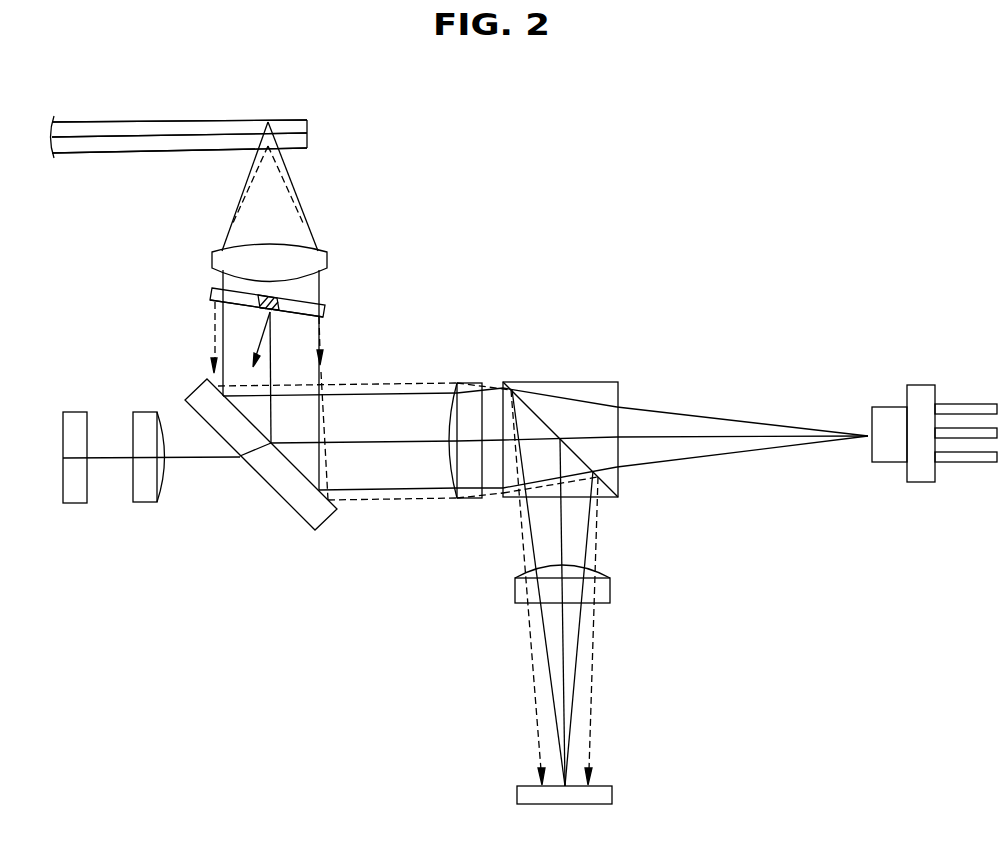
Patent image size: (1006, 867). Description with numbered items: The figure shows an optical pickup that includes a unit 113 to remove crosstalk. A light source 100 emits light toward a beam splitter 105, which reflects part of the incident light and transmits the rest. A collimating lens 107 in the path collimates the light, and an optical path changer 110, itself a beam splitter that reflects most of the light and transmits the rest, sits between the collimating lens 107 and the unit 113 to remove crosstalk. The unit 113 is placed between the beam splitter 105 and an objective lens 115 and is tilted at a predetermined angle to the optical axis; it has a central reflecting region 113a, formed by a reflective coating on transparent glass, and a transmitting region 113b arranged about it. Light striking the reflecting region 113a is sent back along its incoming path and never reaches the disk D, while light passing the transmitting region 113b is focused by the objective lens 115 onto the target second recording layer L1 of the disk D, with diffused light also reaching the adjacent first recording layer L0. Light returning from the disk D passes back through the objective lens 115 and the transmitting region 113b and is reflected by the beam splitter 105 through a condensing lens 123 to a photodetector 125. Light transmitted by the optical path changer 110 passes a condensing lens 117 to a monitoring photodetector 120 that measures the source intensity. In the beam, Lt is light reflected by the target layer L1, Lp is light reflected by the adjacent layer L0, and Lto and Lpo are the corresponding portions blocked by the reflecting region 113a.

The light source 100 is at (889, 407).
The beam splitter 105 is at (576, 382).
The collimating lens 107 is at (472, 382).
The optical path changer 110 is at (282, 496).
The unit to remove crosstalk 113 is at (340, 311).
The reflecting region 113a is at (276, 297).
The transmitting region 113b is at (310, 318).
The objective lens 115 is at (327, 255).
The condensing lens 117 is at (146, 502).
The monitoring photodetector 120 is at (75, 503).
The condensing lens 123 is at (515, 582).
The photodetector 125 is at (517, 792).
The disk D is at (144, 120).
The second recording layer L1 is at (305, 126).
The first recording layer L0 is at (305, 142).
The light spot of light reflected by the adjacent recording layer Lp is at (203, 337).
The light spot of light reflected by the adjacent recording layer and blocked by the Lpo is at (249, 339).
The light spot of light reflected by the target recording layer Lt is at (310, 408).
The light spot of light reflected by the target recording layer and blocked by the r Lto is at (285, 377).